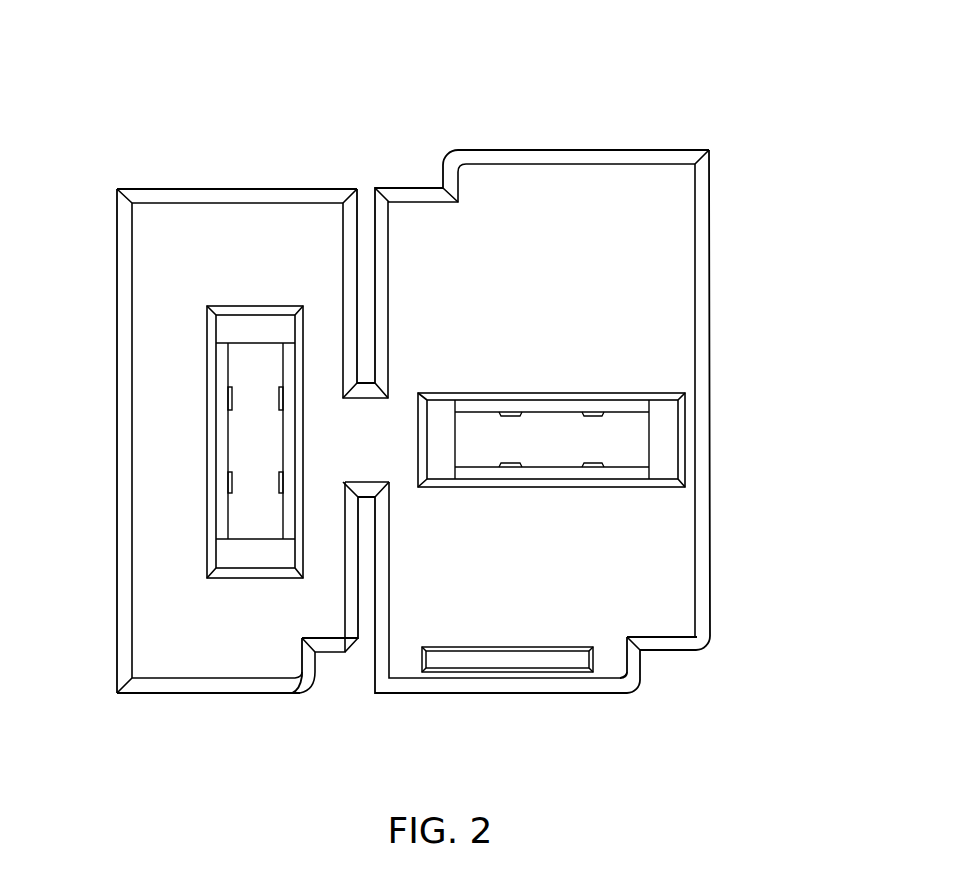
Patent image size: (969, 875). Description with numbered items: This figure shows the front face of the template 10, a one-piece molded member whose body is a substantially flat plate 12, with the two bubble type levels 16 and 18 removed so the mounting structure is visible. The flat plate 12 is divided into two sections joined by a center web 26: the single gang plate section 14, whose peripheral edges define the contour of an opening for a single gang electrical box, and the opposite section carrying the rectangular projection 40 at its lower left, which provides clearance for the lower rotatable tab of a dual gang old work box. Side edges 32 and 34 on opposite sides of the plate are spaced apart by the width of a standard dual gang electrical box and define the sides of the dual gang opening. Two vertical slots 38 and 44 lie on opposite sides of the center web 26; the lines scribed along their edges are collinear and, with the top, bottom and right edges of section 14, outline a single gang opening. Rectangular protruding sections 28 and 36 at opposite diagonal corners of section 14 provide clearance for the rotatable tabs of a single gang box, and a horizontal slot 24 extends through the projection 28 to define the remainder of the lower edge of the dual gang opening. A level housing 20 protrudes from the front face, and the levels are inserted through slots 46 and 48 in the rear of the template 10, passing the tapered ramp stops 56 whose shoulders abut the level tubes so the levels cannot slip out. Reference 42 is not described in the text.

The template 10 is at (724, 294).
The flat plate 12 is at (648, 233).
The single gang plate section 14 is at (703, 596).
The bubble level 16 is at (246, 503).
The bubble level 18 is at (557, 445).
The level housing 20 is at (663, 455).
The horizontal slot 24 is at (498, 672).
The center web 26 is at (363, 436).
The rectangular projection 28 is at (612, 665).
The side edge 32 is at (117, 332).
The side edge 34 is at (710, 373).
The protruding section 36 is at (576, 150).
The vertical slot 38 is at (373, 570).
The rectangular projection 40 is at (207, 693).
The top edge of left section 42 is at (263, 187).
The vertical slot 44 is at (377, 283).
The slot 46 is at (483, 408).
The slot 48 is at (230, 425).
The tapered ramp stop 56 is at (593, 467).